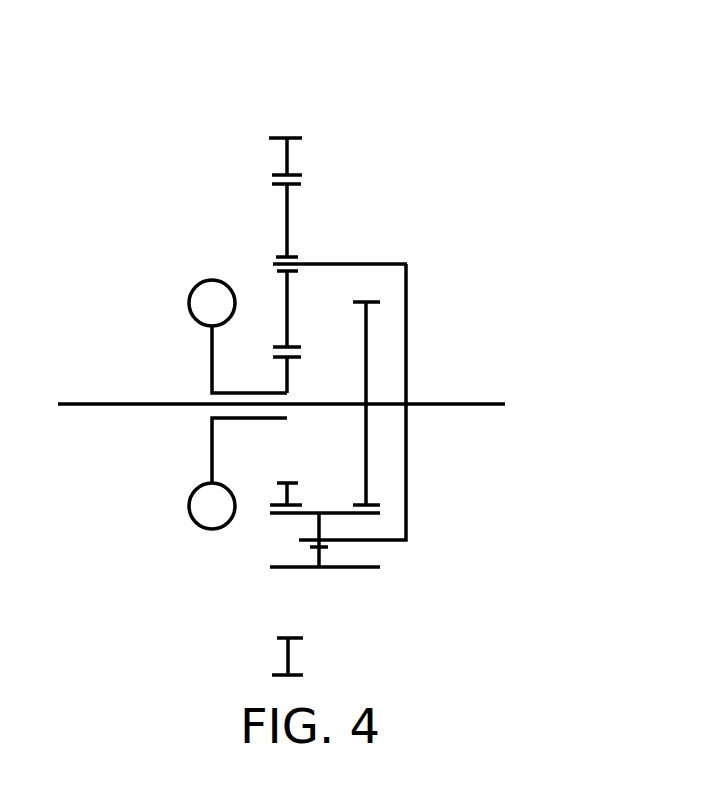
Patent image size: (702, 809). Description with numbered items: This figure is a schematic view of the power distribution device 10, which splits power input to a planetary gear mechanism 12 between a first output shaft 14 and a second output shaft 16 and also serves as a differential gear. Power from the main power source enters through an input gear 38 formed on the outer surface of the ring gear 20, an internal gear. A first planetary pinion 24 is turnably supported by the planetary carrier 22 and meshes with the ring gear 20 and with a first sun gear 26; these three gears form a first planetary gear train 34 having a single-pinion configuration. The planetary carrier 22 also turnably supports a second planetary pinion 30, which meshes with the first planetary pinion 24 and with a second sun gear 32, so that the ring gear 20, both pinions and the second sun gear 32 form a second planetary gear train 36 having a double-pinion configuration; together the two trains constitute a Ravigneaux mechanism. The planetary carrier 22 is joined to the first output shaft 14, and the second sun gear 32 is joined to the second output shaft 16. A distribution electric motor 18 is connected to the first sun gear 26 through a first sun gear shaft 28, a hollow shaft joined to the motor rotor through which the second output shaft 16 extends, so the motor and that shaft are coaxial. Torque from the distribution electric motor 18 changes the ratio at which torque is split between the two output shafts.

The power distribution device 10 is at (140, 130).
The planetary gear mechanism 12 is at (380, 178).
The first output shaft 14 is at (465, 403).
The second output shaft 16 is at (103, 403).
The distribution electric motor 18 is at (190, 290).
The ring gear 20 is at (290, 163).
The planetary carrier 22 is at (407, 293).
The first planetary pinion 24 is at (290, 212).
The first sun gear 26 is at (282, 368).
The first sun gear shaft 28 is at (239, 423).
The second planetary pinion 30 is at (320, 557).
The second sun gear 32 is at (366, 490).
The first planetary gear train 34 is at (257, 170).
The second planetary gear train 36 is at (349, 587).
The input gear 38 is at (277, 130).